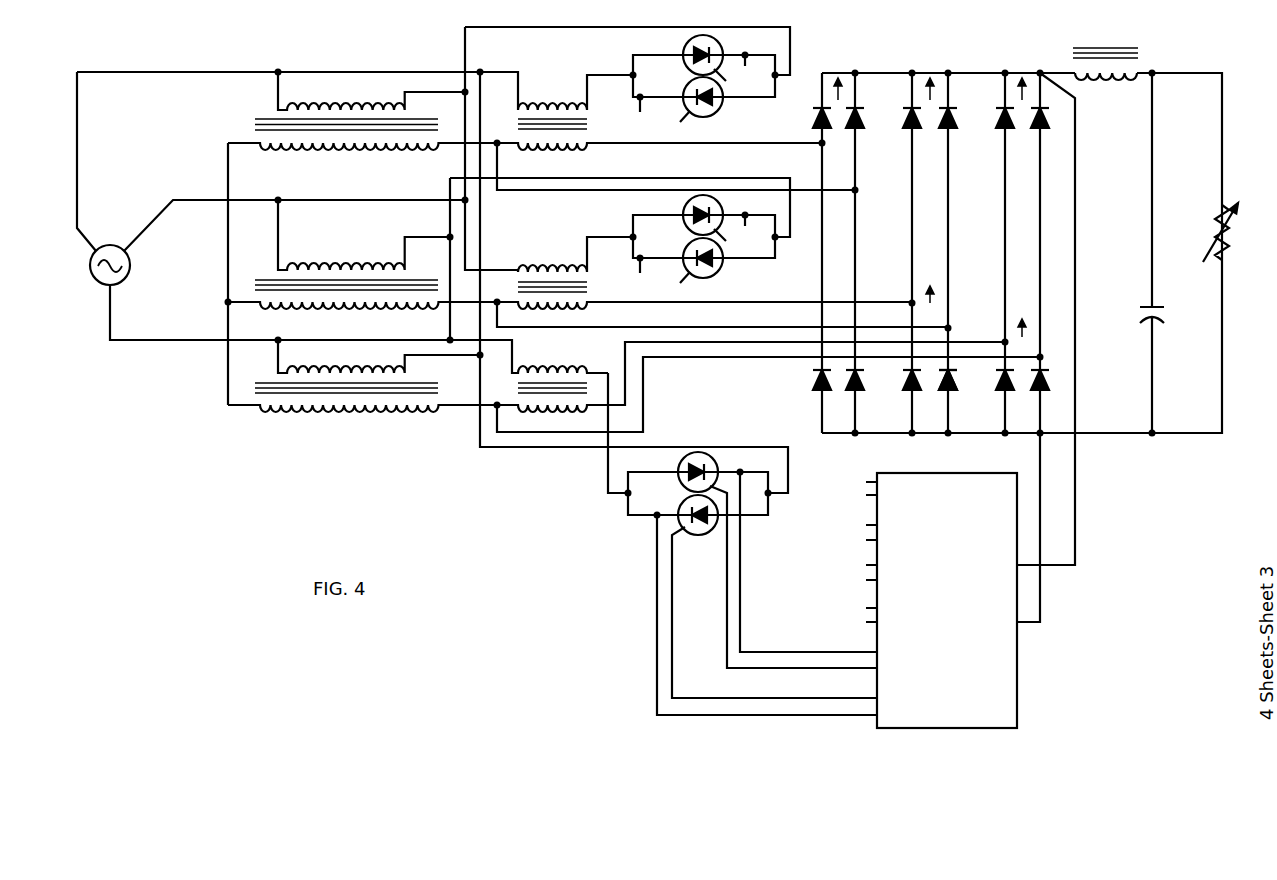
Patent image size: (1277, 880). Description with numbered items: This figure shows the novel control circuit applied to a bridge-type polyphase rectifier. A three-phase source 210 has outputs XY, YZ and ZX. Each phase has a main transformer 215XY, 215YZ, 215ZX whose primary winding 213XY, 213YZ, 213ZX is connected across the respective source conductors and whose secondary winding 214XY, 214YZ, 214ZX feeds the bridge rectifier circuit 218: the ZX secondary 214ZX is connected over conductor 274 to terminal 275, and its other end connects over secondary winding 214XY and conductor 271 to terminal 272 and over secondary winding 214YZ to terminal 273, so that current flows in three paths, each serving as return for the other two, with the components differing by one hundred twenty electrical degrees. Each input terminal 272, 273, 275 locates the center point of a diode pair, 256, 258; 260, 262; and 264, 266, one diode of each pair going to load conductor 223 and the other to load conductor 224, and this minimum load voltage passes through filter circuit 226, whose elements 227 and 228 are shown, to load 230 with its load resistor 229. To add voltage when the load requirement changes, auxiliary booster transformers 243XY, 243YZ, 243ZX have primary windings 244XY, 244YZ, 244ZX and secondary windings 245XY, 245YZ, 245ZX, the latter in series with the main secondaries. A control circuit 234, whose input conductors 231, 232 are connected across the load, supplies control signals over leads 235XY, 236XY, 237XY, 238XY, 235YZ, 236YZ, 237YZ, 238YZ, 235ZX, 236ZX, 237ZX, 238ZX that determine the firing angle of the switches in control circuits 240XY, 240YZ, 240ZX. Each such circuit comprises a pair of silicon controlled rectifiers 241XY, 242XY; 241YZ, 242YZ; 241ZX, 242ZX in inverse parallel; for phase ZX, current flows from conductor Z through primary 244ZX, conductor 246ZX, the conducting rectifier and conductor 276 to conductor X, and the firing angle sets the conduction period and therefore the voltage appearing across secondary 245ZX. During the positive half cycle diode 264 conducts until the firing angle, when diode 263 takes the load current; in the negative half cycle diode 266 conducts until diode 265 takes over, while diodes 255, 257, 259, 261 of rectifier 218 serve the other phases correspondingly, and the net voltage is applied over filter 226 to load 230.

The source 210 is at (109, 259).
The primary winding of transformer 215XY 213XY is at (312, 89).
The secondary winding 214XY is at (303, 152).
The transformer 215XY is at (190, 132).
The primary winding of transformer 215YZ 213YZ is at (312, 249).
The secondary winding 214YZ is at (303, 311).
The transformer 215YZ is at (200, 294).
The primary winding 213ZX is at (312, 354).
The secondary winding 214ZX is at (303, 414).
The main transformer 215ZX is at (200, 356).
The auxiliary transformer 243XY is at (580, 61).
The primary winding of control transformer 243XY 244XY is at (519, 89).
The secondary winding of control transformer 243XY 245XY is at (519, 156).
The control circuit 240XY is at (848, 56).
The controlled rectifier 241XY is at (732, 51).
The controlled rectifier 242XY is at (733, 98).
The control lead 235XY is at (692, 77).
The gate lead 236XY is at (740, 83).
The control lead 237XY is at (632, 115).
The gate lead 238XY is at (709, 126).
The auxiliary transformer 243YZ is at (572, 241).
The primary winding of control transformer 243YZ 244YZ is at (519, 256).
The secondary winding of control transformer 243YZ 245YZ is at (519, 311).
The control circuit 240YZ is at (803, 302).
The controlled rectifier 241YZ is at (731, 214).
The controlled rectifier 242YZ is at (733, 260).
The control lead 235YZ is at (692, 234).
The gate lead 236YZ is at (740, 244).
The control lead 237YZ is at (668, 280).
The gate lead 238YZ is at (685, 277).
The booster transformer 243ZX is at (587, 348).
The primary winding 244ZX is at (524, 359).
The secondary winding 245ZX is at (519, 414).
The conductor 246ZX is at (582, 434).
The control circuit 240ZX is at (620, 549).
The silicon controlled rectifier 241ZX is at (729, 471).
The silicon controlled rectifier 242ZX is at (698, 540).
The control lead 235ZX is at (808, 563).
The gate lead 236ZX is at (793, 587).
The control lead 237ZX is at (852, 700).
The gate lead 238ZX is at (743, 718).
The conductor 271 is at (583, 192).
The bridge rectifier terminal 272 is at (743, 319).
The rectifier terminal 273 is at (742, 328).
The conductor 274 is at (468, 407).
The terminal 275 is at (851, 346).
The conductor 276 is at (486, 455).
The bridge rectifier circuit 218 is at (1030, 65).
The load conductor 223 is at (995, 80).
The load conductor 224 is at (988, 436).
The filter circuit 226 is at (1105, 65).
The inductor winding 227 is at (1106, 90).
The filter capacitor 228 is at (1171, 313).
The load resistor 229 is at (1236, 232).
The load 230 is at (1272, 159).
The input conductor 231 is at (1078, 513).
The input conductor 232 is at (1056, 470).
The control circuit 234 is at (968, 604).
The rectifier diode 255 is at (816, 122).
The diode 256 is at (866, 112).
The rectifier diode 257 is at (810, 377).
The diode 258 is at (873, 378).
The rectifier diode 259 is at (904, 118).
The diode 260 is at (968, 126).
The rectifier diode 261 is at (930, 378).
The diode 262 is at (966, 378).
The diode 263 is at (999, 136).
The diode 264 is at (1057, 129).
The diode 265 is at (996, 401).
The diode 266 is at (1052, 383).